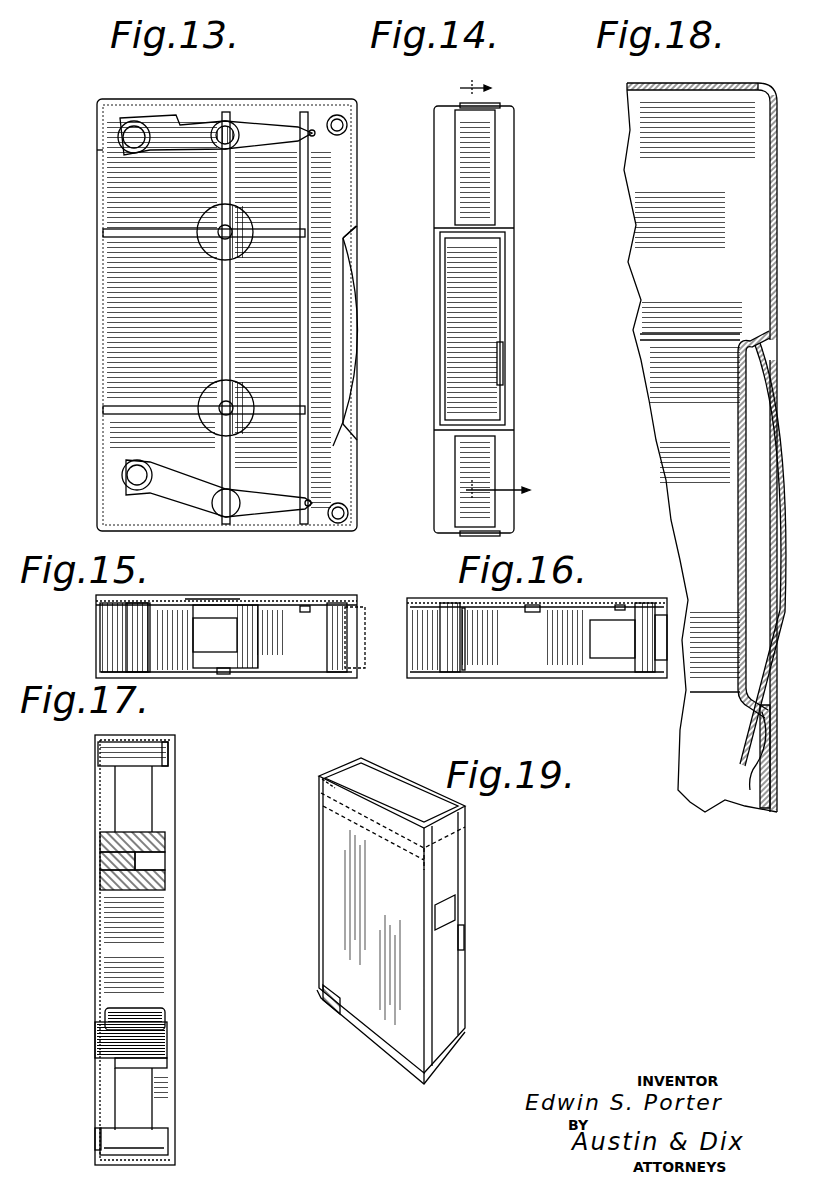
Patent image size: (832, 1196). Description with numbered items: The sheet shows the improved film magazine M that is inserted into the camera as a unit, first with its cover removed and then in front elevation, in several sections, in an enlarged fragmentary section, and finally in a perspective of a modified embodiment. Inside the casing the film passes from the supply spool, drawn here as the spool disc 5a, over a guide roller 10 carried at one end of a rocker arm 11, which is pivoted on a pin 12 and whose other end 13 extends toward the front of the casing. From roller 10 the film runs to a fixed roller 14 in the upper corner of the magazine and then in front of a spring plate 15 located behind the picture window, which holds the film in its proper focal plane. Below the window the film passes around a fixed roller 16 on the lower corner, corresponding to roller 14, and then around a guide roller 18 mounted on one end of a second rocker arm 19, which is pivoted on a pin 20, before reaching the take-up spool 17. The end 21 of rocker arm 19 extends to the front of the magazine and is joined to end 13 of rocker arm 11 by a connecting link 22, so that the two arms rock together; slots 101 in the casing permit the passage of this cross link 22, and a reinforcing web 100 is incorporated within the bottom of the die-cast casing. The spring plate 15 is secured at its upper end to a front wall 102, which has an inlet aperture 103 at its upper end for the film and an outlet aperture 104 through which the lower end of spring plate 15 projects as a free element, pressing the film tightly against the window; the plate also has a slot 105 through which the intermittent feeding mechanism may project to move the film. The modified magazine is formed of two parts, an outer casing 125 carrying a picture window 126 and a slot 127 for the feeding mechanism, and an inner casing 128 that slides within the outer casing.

In FIG. 13, the upper film spool disc 5a is at (212, 216).
In FIG. 17, the upper film spool disc 5a is at (138, 830).
In FIG. 13, the guide roller 10 is at (128, 145).
In FIG. 13, the rocker arm 11 is at (180, 134).
In FIG. 13, the pin 12 is at (236, 136).
In FIG. 17, the pin 12 is at (97, 762).
In FIG. 13, the end of rocker arm 13 is at (308, 138).
In FIG. 13, the fixed roller 14 is at (335, 136).
In FIG. 17, the fixed roller 14 is at (168, 754).
In FIG. 13, the spring plate 15 is at (352, 240).
In FIG. 14, the spring plate 15 is at (472, 328).
In FIG. 18, the spring plate 15 is at (779, 504).
In FIG. 15, the spring plate 15 is at (364, 672).
In FIG. 13, the fixed roller 16 is at (336, 504).
In FIG. 16, the fixed roller 16 is at (638, 662).
In FIG. 17, the fixed roller 16 is at (128, 1134).
In FIG. 13, the take-up spool 17 is at (250, 420).
In FIG. 15, the take-up spool 17 is at (212, 656).
In FIG. 17, the take-up spool 17 is at (168, 1016).
In FIG. 13, the guide roller 18 is at (132, 462).
In FIG. 15, the guide roller 18 is at (130, 657).
In FIG. 16, the guide roller 18 is at (446, 662).
In FIG. 13, the rocker arm 19 is at (175, 490).
In FIG. 14, the rocker arm 19 is at (508, 290).
In FIG. 16, the rocker arm 19 is at (488, 612).
In FIG. 13, the pin 20 is at (236, 498).
In FIG. 16, the pin 20 is at (536, 612).
In FIG. 17, the pin 20 is at (95, 1138).
In FIG. 13, the end of rocker arm 21 is at (296, 502).
In FIG. 15, the end of rocker arm 21 is at (304, 614).
In FIG. 16, the end of rocker arm 21 is at (580, 612).
In FIG. 13, the connecting link 22 is at (248, 322).
In FIG. 13, the film magazine M is at (98, 151).
In FIG. 13, the reinforcing web 100 is at (170, 232).
In FIG. 18, the reinforcing web 100 is at (684, 336).
In FIG. 15, the reinforcing web 100 is at (185, 598).
In FIG. 13, the slots 101 is at (306, 240).
In FIG. 13, the front wall 102 is at (345, 334).
In FIG. 18, the front wall 102 is at (740, 444).
In FIG. 18, the inlet aperture 103 is at (760, 322).
In FIG. 18, the outlet aperture 104 is at (739, 751).
In FIG. 14, the slot 105 is at (500, 372).
In FIG. 19, the outer casing 125 is at (318, 798).
In FIG. 19, the picture window 126 is at (455, 905).
In FIG. 19, the slot 127 is at (466, 940).
In FIG. 13, the inner casing 128 is at (113, 383).
In FIG. 14, the inner casing 128 is at (502, 218).
In FIG. 18, the inner casing 128 is at (700, 447).
In FIG. 15, the inner casing 128 is at (340, 586).
In FIG. 16, the inner casing 128 is at (412, 605).
In FIG. 17, the inner casing 128 is at (97, 975).
In FIG. 19, the inner casing 128 is at (448, 1058).